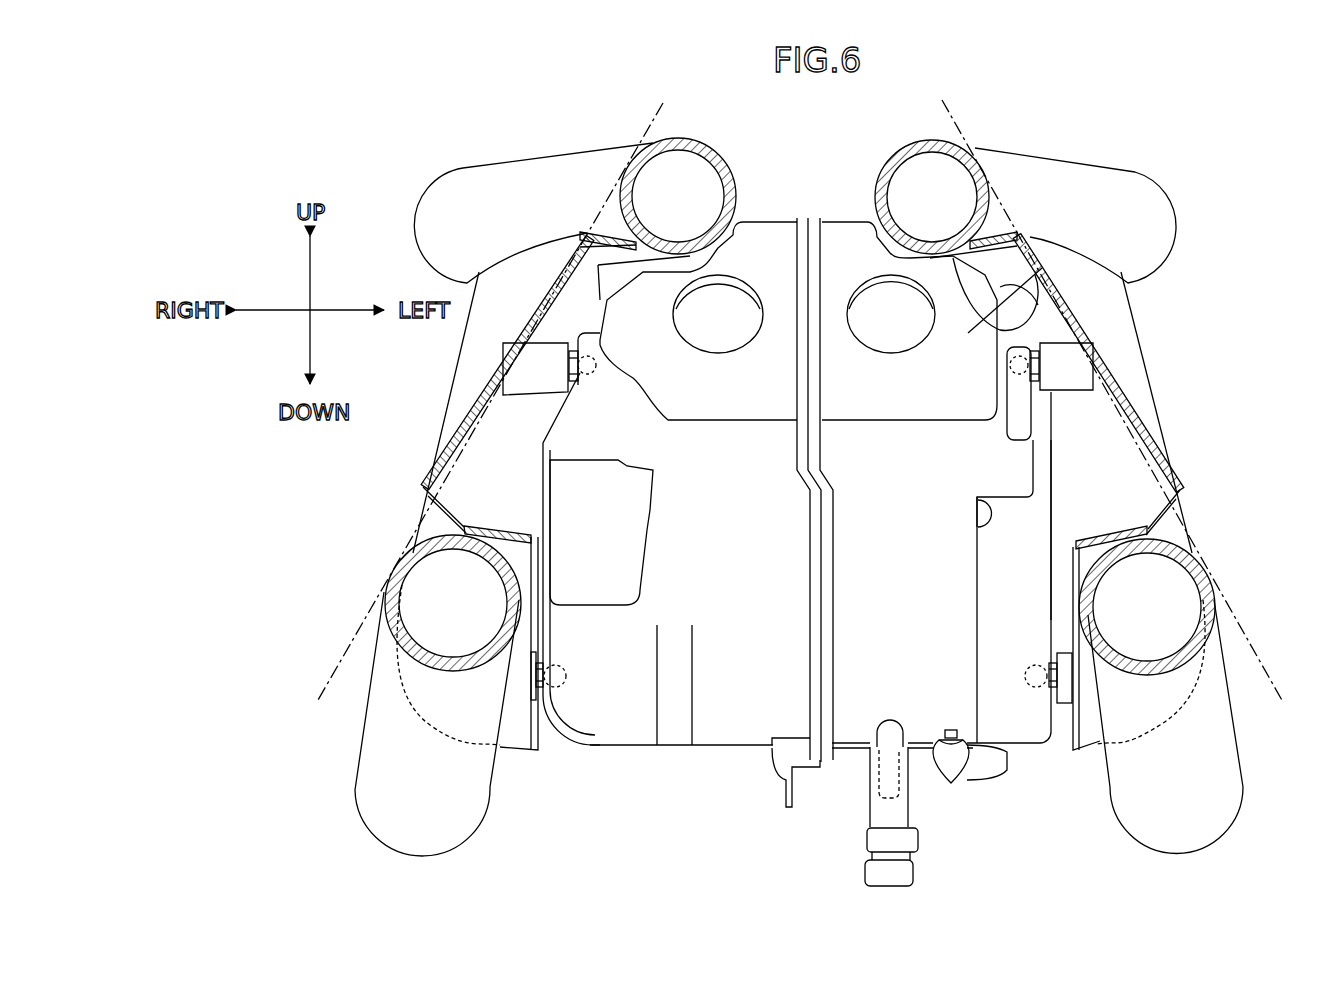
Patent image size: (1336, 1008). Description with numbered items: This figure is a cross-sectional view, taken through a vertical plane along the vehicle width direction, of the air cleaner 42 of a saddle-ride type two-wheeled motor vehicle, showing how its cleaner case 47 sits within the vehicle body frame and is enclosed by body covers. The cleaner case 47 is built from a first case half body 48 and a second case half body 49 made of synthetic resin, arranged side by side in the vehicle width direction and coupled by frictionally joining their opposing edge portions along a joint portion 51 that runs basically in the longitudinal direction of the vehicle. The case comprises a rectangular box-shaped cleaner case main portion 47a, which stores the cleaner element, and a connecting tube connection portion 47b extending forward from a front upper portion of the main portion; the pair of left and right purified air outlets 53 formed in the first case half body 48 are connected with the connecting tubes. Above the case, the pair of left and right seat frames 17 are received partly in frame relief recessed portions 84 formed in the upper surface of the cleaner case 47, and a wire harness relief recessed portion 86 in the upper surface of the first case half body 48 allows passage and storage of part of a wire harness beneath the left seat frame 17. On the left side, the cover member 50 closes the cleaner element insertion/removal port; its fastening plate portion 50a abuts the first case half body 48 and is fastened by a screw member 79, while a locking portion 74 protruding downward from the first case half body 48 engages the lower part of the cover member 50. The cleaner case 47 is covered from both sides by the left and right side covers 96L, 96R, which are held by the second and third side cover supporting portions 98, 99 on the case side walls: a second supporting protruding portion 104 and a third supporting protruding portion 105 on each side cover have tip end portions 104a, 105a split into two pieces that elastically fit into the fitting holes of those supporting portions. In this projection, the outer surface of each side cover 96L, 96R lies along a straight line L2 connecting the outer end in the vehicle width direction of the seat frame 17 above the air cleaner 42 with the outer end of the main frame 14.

The seat frame 17 is at (567, 170).
The frame relief recessed portion 84 is at (693, 267).
The connecting tube connection portion 47b is at (1027, 241).
The wire harness relief recessed portion 86 is at (970, 330).
The third supporting protruding portion 105 is at (543, 383).
The tip end portion 105a is at (597, 380).
The third side cover supporting portion 99 is at (577, 347).
The cleaner case 47 is at (1058, 430).
The left side cover 96L is at (1163, 440).
The right side cover 96R is at (462, 363).
The second case half body 49 is at (541, 524).
The purified air outlet 53 is at (733, 350).
The fastening plate portion 50a is at (980, 502).
The screw member 79 is at (987, 512).
The cover member 50 is at (1053, 543).
The joint portion 51 is at (822, 570).
The first case half body 48 is at (932, 562).
The straight line L2 is at (352, 640).
The main frame 14 is at (410, 655).
The tip end portion 104a is at (558, 665).
The second side cover supporting portion 98 is at (543, 690).
The second supporting protruding portion 104 is at (537, 700).
The air cleaner 42 is at (585, 750).
The locking portion 74 is at (995, 772).
The cleaner case main portion 47a is at (728, 716).